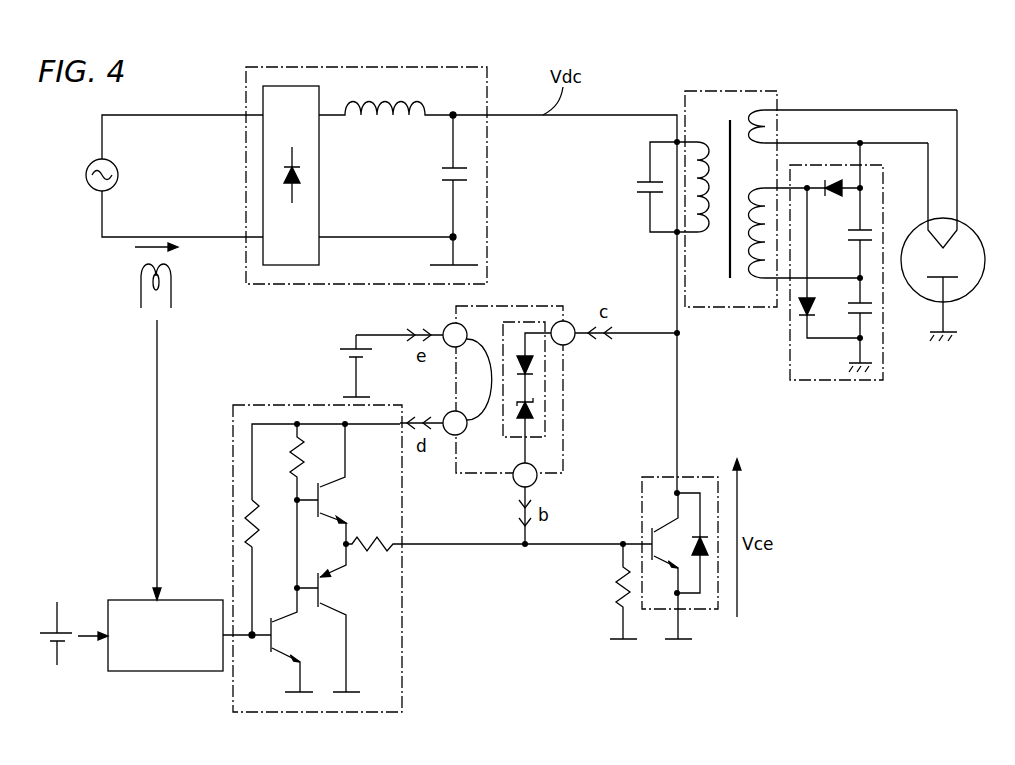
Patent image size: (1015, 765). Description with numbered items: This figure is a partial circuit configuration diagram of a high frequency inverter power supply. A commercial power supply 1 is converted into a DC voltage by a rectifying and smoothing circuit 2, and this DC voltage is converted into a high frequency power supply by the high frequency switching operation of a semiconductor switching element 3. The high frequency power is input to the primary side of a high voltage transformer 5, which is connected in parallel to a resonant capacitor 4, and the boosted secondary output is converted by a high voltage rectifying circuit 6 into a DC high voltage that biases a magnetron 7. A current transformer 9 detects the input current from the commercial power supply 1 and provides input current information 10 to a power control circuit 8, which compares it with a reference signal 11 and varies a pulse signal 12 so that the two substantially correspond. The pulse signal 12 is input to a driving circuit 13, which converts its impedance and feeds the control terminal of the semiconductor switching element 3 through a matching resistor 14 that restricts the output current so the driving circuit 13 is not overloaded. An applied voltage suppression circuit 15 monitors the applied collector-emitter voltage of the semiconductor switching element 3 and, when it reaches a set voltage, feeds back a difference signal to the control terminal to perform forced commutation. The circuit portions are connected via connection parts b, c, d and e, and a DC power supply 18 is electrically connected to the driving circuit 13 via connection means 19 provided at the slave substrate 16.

The commercial power supply 1 is at (86, 175).
The rectifying and smoothing circuit 2 is at (323, 67).
The semiconductor switching element 3 is at (657, 477).
The resonant capacitor 4 is at (637, 187).
The high voltage transformer 5 is at (730, 91).
The high voltage rectifying circuit 6 is at (855, 382).
The magnetron 7 is at (963, 227).
The power control circuit 8 is at (160, 673).
The current transformer 9 is at (140, 285).
The input current information 10 is at (157, 466).
The reference signal 11 is at (50, 632).
The pulse signal 12 is at (240, 640).
The driving circuit 13 is at (402, 697).
The matching resistor 14 is at (372, 556).
The applied voltage suppression circuit 15 is at (547, 388).
The slave substrate 16 is at (547, 306).
The DC power supply 18 is at (340, 353).
The connection means 19 is at (483, 338).